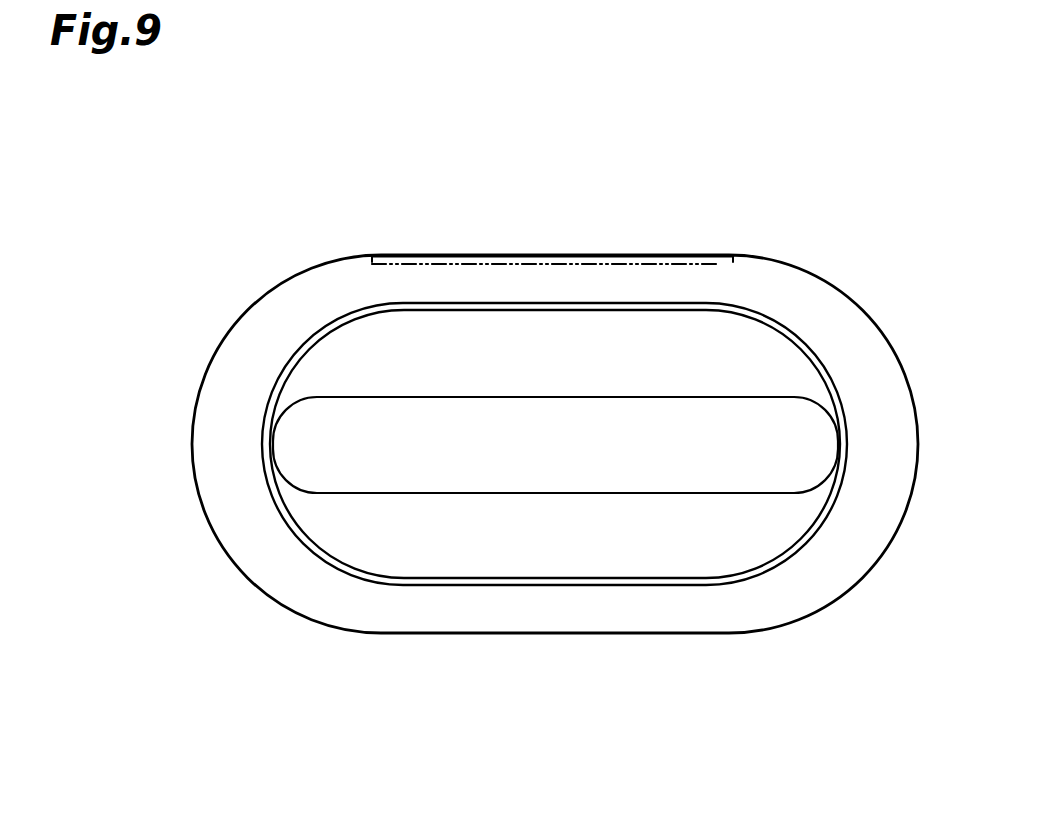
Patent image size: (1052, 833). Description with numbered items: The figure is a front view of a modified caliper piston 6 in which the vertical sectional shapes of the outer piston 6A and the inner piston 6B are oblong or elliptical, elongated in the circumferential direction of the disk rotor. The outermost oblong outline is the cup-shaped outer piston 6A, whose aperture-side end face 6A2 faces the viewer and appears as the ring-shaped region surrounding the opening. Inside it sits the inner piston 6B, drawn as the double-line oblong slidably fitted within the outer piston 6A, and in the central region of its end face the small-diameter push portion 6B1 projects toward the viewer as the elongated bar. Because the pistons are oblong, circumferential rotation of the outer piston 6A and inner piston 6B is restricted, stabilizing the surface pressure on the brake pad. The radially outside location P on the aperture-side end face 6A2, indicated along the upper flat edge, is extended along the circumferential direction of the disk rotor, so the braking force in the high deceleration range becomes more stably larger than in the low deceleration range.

The caliper piston 6 is at (808, 254).
The outer piston 6A is at (613, 638).
The aperture-side end face 6A2 is at (371, 284).
The inner piston 6B is at (543, 586).
The small-diameter push portion 6B1 is at (450, 492).
The radially outside location P is at (517, 264).